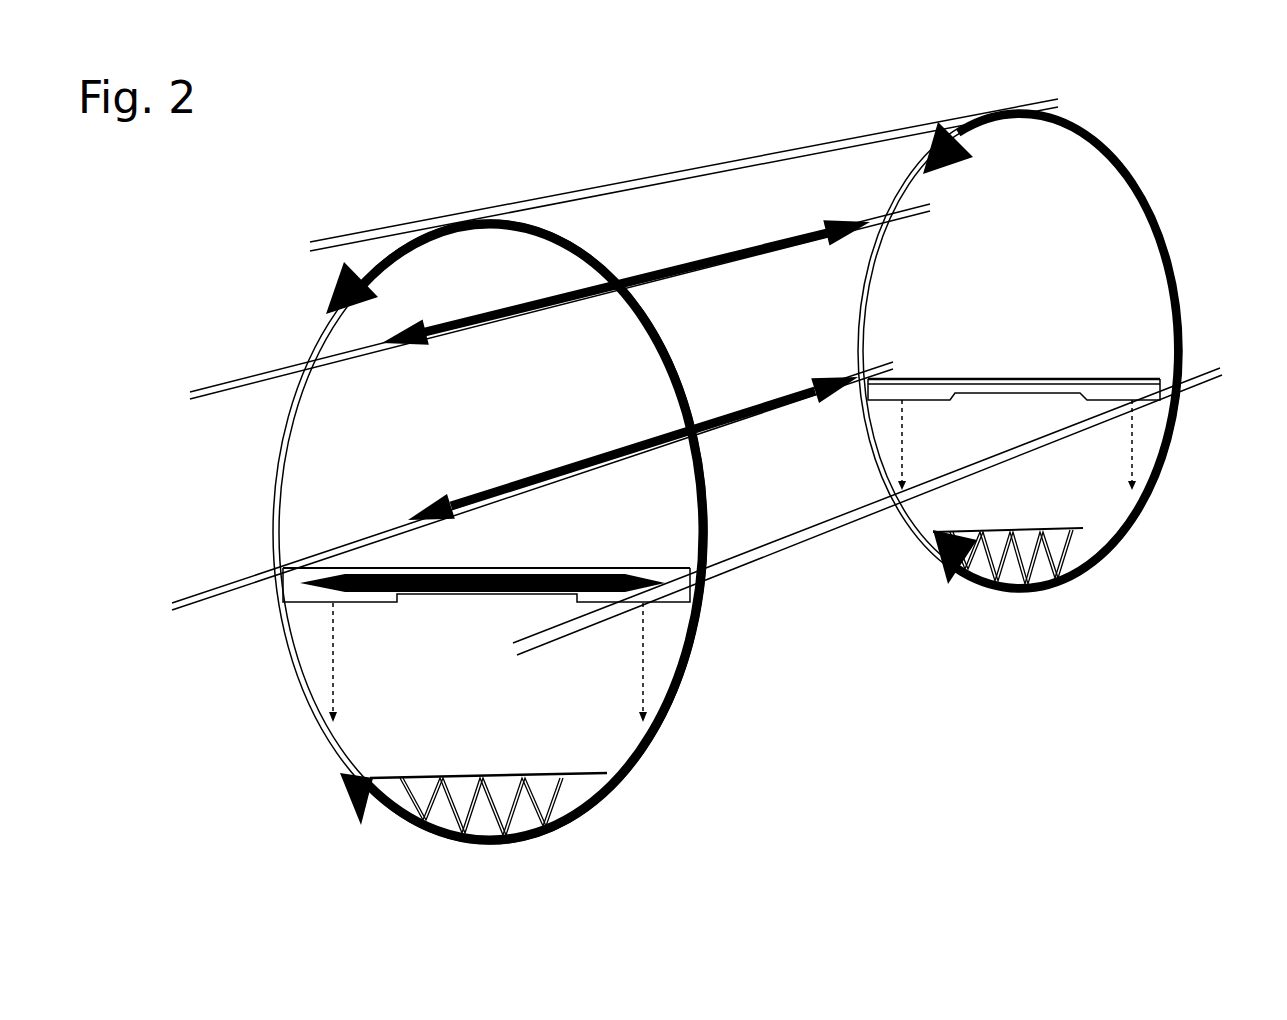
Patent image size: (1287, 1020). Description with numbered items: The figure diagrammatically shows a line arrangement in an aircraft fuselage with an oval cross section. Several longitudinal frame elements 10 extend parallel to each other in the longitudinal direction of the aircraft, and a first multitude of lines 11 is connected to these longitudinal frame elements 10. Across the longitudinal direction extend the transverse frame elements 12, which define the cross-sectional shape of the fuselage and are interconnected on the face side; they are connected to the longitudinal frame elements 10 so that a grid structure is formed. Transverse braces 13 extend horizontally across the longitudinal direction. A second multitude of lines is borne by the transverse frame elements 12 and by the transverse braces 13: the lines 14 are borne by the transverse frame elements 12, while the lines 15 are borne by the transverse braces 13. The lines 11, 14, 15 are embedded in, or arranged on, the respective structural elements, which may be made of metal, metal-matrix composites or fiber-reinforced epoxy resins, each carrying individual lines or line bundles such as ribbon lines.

The longitudinal frame elements 10 is at (618, 182).
The first multitude of lines 11 is at (713, 248).
The transverse frame elements 12 is at (275, 472).
The transverse braces 13 is at (912, 395).
The lines borne by the transverse frame elements 14 is at (1150, 205).
The lines borne by the transverse braces 15 is at (467, 597).